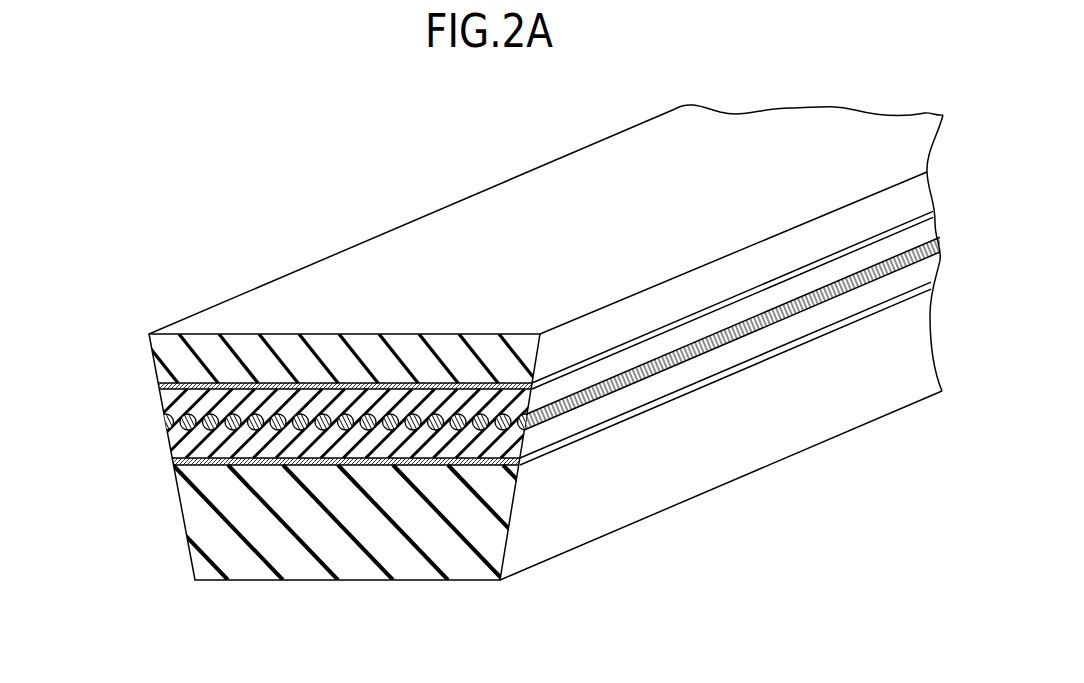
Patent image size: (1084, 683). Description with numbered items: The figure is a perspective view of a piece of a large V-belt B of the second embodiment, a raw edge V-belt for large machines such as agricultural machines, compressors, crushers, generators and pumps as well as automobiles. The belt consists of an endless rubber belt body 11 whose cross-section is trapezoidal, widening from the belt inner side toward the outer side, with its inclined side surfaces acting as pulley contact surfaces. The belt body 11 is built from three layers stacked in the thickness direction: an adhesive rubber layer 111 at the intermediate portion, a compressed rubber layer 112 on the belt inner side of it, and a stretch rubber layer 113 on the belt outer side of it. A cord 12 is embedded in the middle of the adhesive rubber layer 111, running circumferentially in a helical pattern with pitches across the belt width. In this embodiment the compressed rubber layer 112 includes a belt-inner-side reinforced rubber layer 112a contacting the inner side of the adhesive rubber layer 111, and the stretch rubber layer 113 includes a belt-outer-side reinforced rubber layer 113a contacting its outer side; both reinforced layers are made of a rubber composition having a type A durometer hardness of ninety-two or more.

The large V-belt B is at (440, 167).
The belt body 11 is at (75, 388).
The cord 12 is at (411, 414).
The adhesive rubber layer 111 is at (183, 443).
The compressed rubber layer 112 is at (190, 508).
The belt-inner-side reinforced rubber layer 112a is at (358, 465).
The stretch rubber layer 113 is at (166, 352).
The belt-outer-side reinforced rubber layer 113a is at (466, 383).